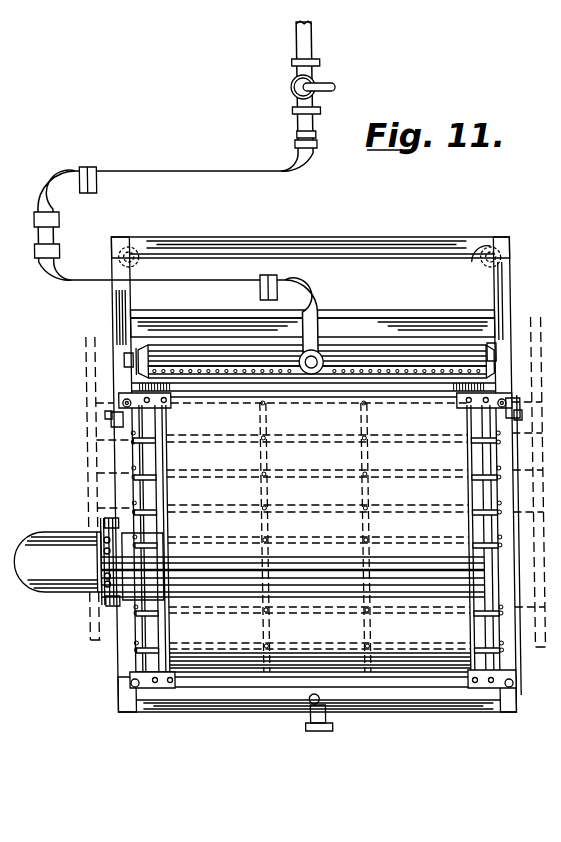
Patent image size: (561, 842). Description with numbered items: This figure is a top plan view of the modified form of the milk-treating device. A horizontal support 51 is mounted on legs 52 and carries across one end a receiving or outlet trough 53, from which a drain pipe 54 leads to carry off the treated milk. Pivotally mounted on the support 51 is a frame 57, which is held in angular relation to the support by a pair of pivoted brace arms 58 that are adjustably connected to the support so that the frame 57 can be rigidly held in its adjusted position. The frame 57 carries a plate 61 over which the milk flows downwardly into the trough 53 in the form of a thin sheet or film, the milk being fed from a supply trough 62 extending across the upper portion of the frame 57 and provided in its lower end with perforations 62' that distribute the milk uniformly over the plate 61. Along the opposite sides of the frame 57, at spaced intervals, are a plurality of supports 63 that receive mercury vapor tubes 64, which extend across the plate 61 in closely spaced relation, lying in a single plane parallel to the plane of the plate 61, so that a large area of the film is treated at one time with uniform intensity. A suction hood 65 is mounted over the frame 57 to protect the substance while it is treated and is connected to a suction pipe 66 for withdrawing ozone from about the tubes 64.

The horizontal support 51 is at (422, 240).
The legs 52 is at (136, 265).
The receiving or outlet trough 53 is at (240, 698).
The drain pipe 54 is at (309, 728).
The frame 57 is at (367, 313).
The pivoted brace arms 58 is at (116, 422).
The plate 61 is at (440, 322).
The supply trough 62 is at (309, 332).
The perforations 62' is at (344, 333).
The supports 63 is at (133, 490).
The mercury vapor tubes 64 is at (285, 476).
The suction hood 65 is at (299, 537).
The suction pipe 66 is at (66, 590).